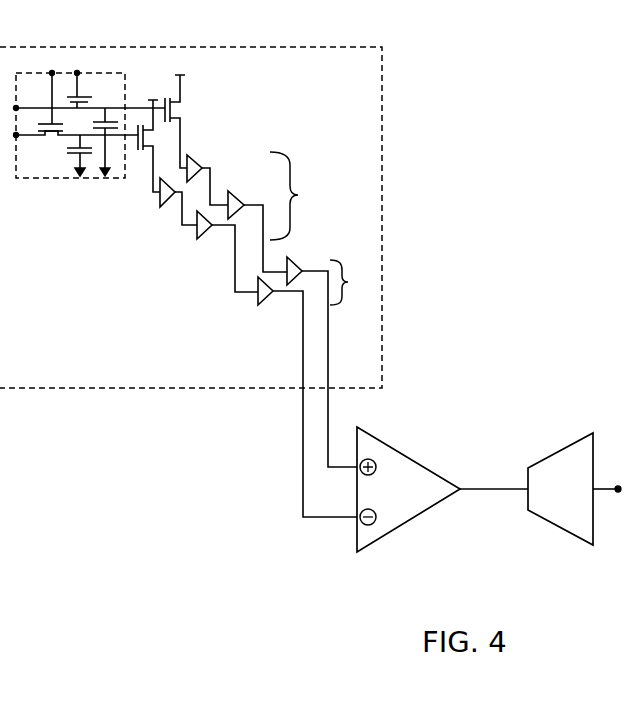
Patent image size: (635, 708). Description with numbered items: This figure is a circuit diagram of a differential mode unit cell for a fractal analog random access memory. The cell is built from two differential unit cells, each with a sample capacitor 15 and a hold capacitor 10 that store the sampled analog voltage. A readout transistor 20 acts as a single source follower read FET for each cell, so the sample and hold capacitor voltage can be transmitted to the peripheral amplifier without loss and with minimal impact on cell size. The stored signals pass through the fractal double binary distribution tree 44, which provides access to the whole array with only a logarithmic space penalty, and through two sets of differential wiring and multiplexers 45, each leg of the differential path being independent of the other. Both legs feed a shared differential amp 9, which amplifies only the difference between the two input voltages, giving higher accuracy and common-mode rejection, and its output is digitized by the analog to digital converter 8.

The sample capacitor 15 is at (86, 95).
The hold capacitor 10 is at (113, 112).
The readout transistor 20 is at (182, 110).
The double binary distribution tree 44 is at (298, 195).
The differential wiring and multiplexers 45 is at (348, 282).
The differential amp 9 is at (408, 493).
The analog to digital converter 8 is at (569, 492).